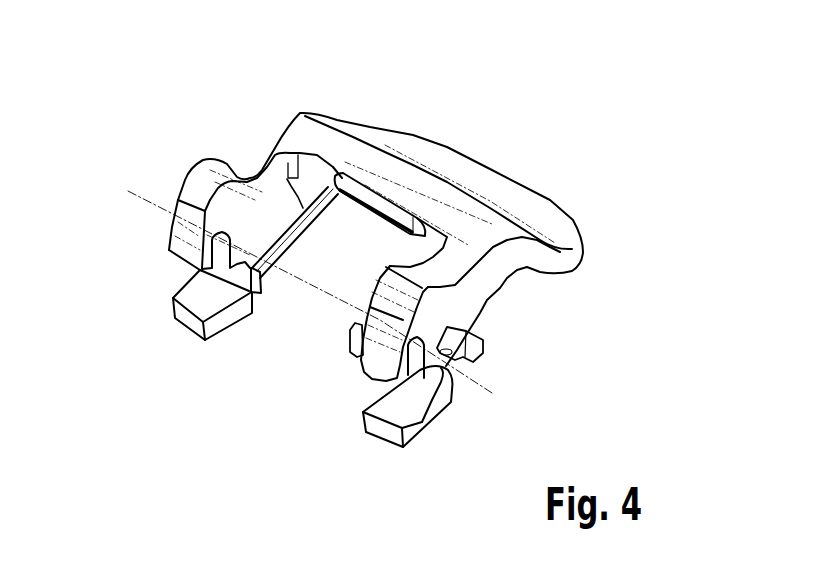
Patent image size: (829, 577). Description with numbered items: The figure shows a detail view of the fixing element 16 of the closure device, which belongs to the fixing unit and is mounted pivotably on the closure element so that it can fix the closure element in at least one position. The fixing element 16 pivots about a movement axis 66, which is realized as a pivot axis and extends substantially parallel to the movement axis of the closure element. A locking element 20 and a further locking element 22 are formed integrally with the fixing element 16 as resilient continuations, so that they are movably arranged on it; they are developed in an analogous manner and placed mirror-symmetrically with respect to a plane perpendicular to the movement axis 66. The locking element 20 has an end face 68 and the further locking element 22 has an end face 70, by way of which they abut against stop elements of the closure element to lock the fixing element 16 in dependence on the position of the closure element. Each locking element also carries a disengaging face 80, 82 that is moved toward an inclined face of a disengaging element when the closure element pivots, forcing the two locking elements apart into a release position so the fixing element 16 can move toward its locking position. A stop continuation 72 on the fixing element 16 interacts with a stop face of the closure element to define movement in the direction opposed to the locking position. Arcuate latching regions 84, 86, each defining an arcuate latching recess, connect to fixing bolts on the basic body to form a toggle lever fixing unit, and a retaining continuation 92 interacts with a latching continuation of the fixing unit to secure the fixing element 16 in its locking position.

The fixing element 16 is at (541, 214).
The locking element 20 is at (352, 336).
The further locking element 22 is at (284, 224).
The movement axis 66 is at (143, 195).
The end face 68 is at (356, 343).
The end face 70 is at (244, 280).
The stop continuation 72 is at (483, 358).
The disengaging face 80 is at (358, 350).
The disengaging face 82 is at (274, 285).
The latching region 84 is at (352, 458).
The latching region 86 is at (157, 348).
The retaining continuation 92 is at (353, 185).